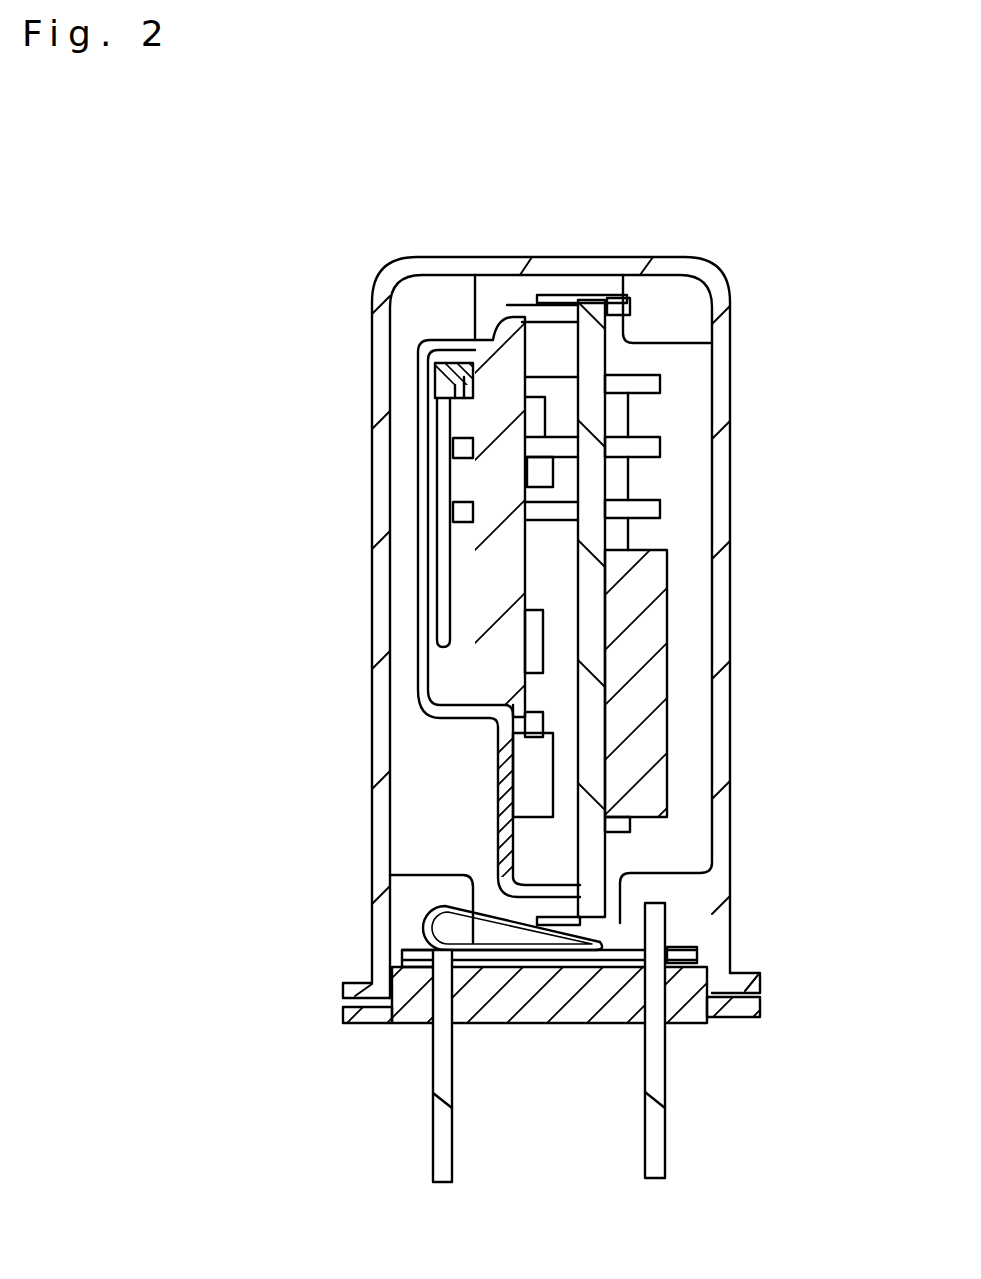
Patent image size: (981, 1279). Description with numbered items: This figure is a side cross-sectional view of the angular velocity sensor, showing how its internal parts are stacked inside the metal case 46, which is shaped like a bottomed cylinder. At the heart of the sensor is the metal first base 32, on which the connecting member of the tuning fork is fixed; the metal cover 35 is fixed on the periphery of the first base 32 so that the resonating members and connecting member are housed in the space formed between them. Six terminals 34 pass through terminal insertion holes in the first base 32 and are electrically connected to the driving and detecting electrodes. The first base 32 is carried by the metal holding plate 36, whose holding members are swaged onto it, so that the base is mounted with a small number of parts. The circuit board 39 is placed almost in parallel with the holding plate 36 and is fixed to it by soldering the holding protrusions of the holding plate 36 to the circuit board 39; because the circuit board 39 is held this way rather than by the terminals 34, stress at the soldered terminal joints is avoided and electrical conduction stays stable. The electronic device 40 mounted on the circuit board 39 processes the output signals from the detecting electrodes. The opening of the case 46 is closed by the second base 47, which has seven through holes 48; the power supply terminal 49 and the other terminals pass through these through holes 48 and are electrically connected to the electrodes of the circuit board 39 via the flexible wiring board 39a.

The first base 32 is at (513, 317).
The terminals 34 is at (652, 384).
The cover 35 is at (425, 473).
The holding plate 36 is at (497, 830).
The circuit board 39 is at (592, 650).
The flexible wiring board 39a is at (430, 930).
The electronic device 40 is at (650, 748).
The case 46 is at (720, 487).
The second base 47 is at (733, 1010).
The through holes 48 is at (425, 1023).
The power supply terminal 49 is at (655, 1078).